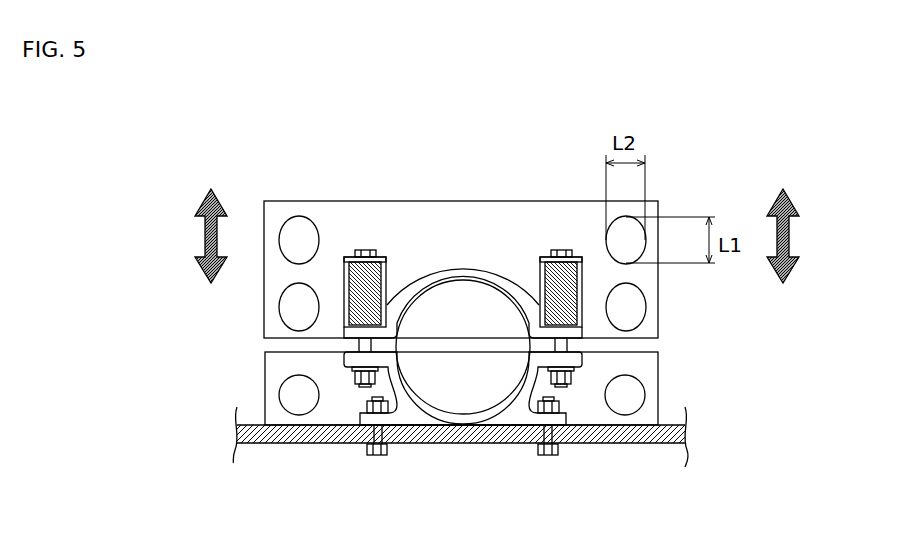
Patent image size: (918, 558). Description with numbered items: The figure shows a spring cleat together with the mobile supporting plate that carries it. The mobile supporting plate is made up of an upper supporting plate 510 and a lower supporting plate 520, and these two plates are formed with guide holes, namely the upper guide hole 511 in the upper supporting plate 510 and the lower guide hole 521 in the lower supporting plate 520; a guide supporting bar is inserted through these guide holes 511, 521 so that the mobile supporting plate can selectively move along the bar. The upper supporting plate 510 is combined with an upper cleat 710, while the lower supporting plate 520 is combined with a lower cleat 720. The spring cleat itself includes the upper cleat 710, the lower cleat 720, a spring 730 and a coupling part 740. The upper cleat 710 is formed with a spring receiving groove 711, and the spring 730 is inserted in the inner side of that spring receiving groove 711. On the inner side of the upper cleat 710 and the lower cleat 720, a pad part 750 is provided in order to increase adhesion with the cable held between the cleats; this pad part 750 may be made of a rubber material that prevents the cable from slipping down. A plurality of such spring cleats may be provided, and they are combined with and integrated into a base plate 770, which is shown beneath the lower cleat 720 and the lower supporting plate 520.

The upper supporting plate 510 is at (652, 318).
The upper guide hole 511 is at (290, 303).
The lower supporting plate 520 is at (652, 385).
The lower guide hole 521 is at (290, 395).
The upper cleat 710 is at (477, 270).
The spring receiving groove 711 is at (350, 287).
The lower cleat 720 is at (497, 418).
The spring 730 is at (347, 255).
The coupling part 740 is at (557, 250).
The pad part 750 is at (480, 408).
The base plate 770 is at (633, 437).